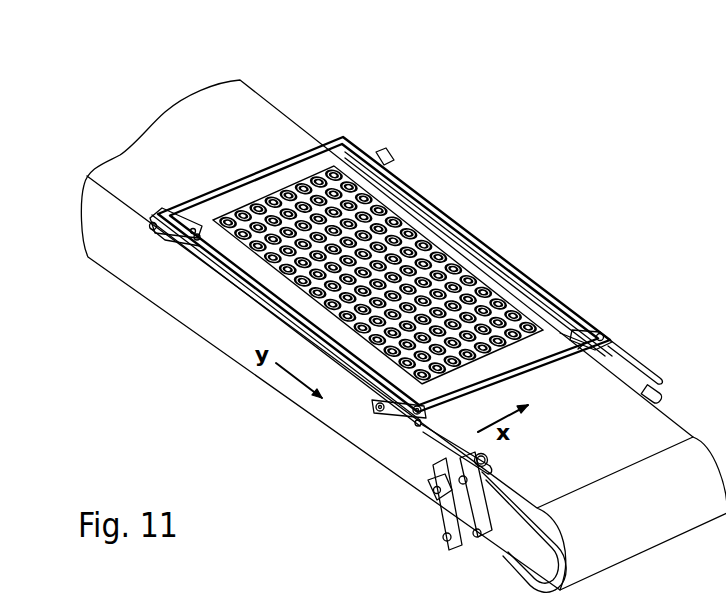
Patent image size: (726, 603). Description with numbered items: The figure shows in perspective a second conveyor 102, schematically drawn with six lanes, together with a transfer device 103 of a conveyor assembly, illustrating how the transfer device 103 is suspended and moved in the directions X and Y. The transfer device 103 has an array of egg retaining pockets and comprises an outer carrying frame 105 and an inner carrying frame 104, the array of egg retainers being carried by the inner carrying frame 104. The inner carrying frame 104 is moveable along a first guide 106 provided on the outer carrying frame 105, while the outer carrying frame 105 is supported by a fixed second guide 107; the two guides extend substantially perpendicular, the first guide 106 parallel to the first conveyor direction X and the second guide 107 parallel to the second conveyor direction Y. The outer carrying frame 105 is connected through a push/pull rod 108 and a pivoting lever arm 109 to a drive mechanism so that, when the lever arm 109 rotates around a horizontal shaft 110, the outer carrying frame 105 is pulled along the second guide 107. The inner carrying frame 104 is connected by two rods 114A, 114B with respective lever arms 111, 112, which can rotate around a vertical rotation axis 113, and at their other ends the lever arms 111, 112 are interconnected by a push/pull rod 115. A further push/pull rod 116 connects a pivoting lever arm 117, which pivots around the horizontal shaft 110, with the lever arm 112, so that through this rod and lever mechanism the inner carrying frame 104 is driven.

The second conveyor 102 is at (593, 427).
The transfer device 103 is at (450, 213).
The inner carrying frame 104 is at (270, 187).
The outer carrying frame 105 is at (575, 340).
The first guide 106 is at (285, 168).
The second guide 107 is at (637, 350).
The push/pull rod 108 is at (440, 446).
The pivoting lever arm 109 is at (500, 532).
The horizontal shaft 110 is at (437, 494).
The lever arm 111 is at (177, 238).
The lever arm 112 is at (378, 409).
The vertical rotation axis 113 is at (197, 237).
The rod 114A is at (252, 210).
The rod 114B is at (520, 377).
The push/pull rod 115 is at (230, 297).
The further push/pull rod 116 is at (420, 426).
The pivoting lever arm 117 is at (443, 520).